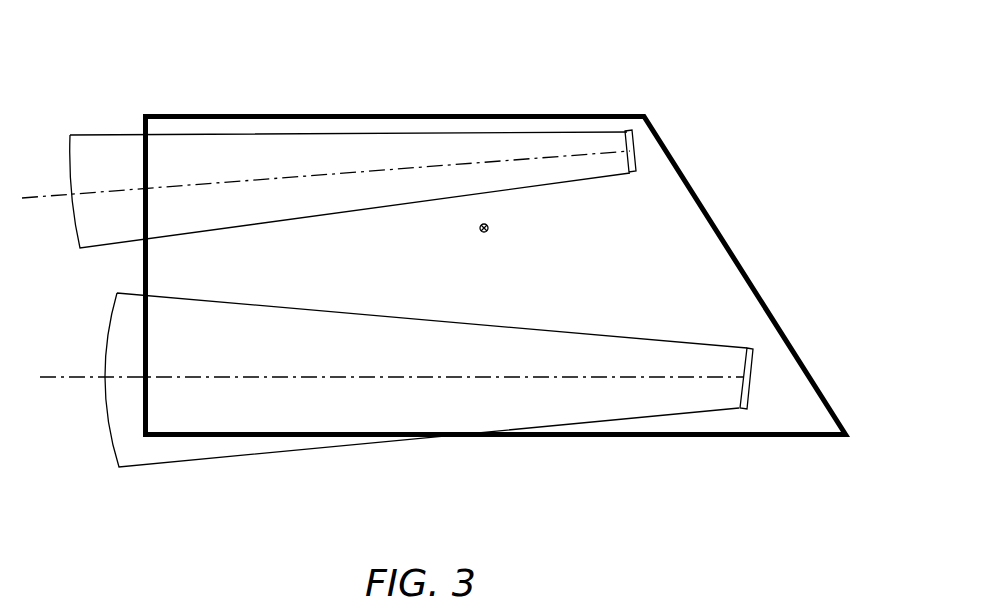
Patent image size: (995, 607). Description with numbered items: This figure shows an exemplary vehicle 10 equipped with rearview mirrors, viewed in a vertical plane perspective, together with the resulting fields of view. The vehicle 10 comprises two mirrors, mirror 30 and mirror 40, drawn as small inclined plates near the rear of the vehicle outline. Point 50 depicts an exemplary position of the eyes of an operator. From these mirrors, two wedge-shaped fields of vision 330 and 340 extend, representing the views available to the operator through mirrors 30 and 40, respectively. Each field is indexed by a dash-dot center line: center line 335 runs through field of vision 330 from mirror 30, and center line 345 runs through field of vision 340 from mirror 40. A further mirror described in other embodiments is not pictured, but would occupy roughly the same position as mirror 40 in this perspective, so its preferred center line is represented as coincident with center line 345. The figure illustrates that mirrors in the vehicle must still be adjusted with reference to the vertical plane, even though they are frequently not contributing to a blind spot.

The vehicle 10 is at (182, 112).
The field of vision 330 is at (272, 130).
The center line 335 is at (365, 165).
The mirror 30 is at (638, 146).
The point 50 is at (479, 216).
The field of vision 340 is at (210, 464).
The center line 345 is at (391, 442).
The mirror 40 is at (758, 377).